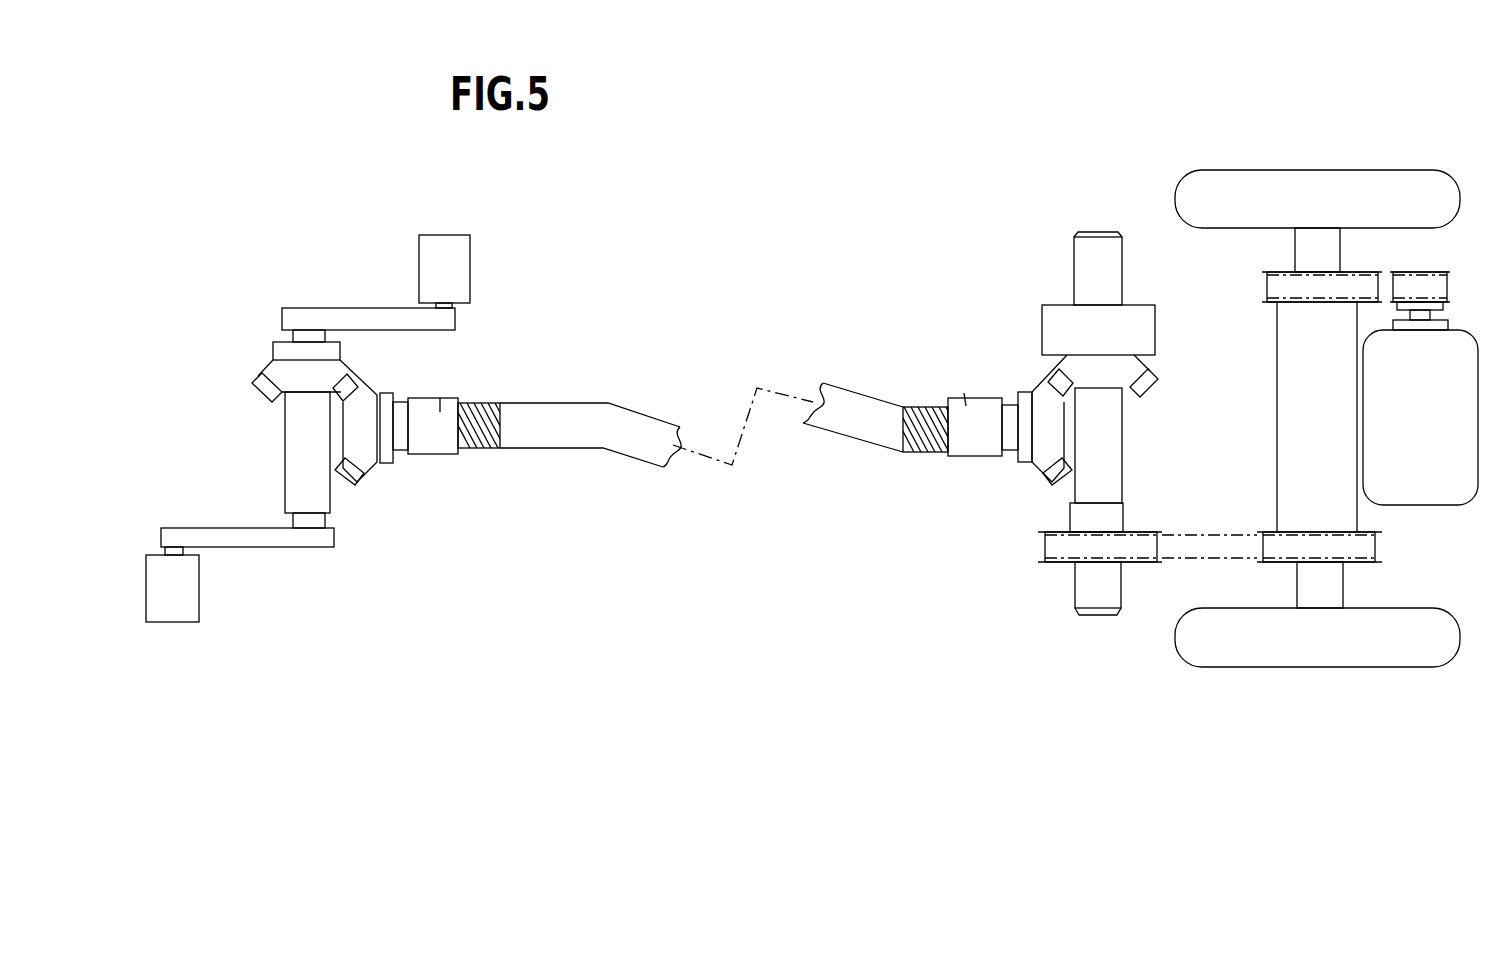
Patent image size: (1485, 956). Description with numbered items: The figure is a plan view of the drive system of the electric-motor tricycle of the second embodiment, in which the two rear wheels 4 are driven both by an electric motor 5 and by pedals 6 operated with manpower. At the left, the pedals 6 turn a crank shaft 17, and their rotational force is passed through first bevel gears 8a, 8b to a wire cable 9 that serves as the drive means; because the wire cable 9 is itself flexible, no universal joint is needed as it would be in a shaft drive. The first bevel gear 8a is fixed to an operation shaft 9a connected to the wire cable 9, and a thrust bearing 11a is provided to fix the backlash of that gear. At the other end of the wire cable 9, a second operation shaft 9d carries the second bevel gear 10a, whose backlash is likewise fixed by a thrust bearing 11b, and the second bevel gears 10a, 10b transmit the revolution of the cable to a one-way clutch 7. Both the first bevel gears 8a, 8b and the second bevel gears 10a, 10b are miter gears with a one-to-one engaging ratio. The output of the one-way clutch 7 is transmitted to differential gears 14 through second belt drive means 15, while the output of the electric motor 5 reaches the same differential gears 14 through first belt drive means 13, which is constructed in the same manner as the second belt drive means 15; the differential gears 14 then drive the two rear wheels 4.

The rear wheel 4 is at (1327, 170).
The electric motor 5 is at (1445, 508).
The pedals 6 is at (185, 623).
The one-way clutch 7 is at (1042, 320).
The first bevel gear 8a is at (372, 470).
The first bevel gear 8b is at (348, 360).
The wire cable 9 is at (590, 400).
The operation shaft 9a is at (397, 450).
The operation shaft 9d is at (1008, 458).
The second bevel gear 10a is at (1040, 383).
The second bevel gear 10b is at (1155, 388).
The thrust bearing 11a is at (444, 390).
The thrust bearing 11b is at (962, 393).
The first belt drive means 13 is at (1240, 285).
The differential gears 14 is at (1280, 357).
The second belt drive means 15 is at (1182, 577).
The crank shaft 17 is at (327, 522).